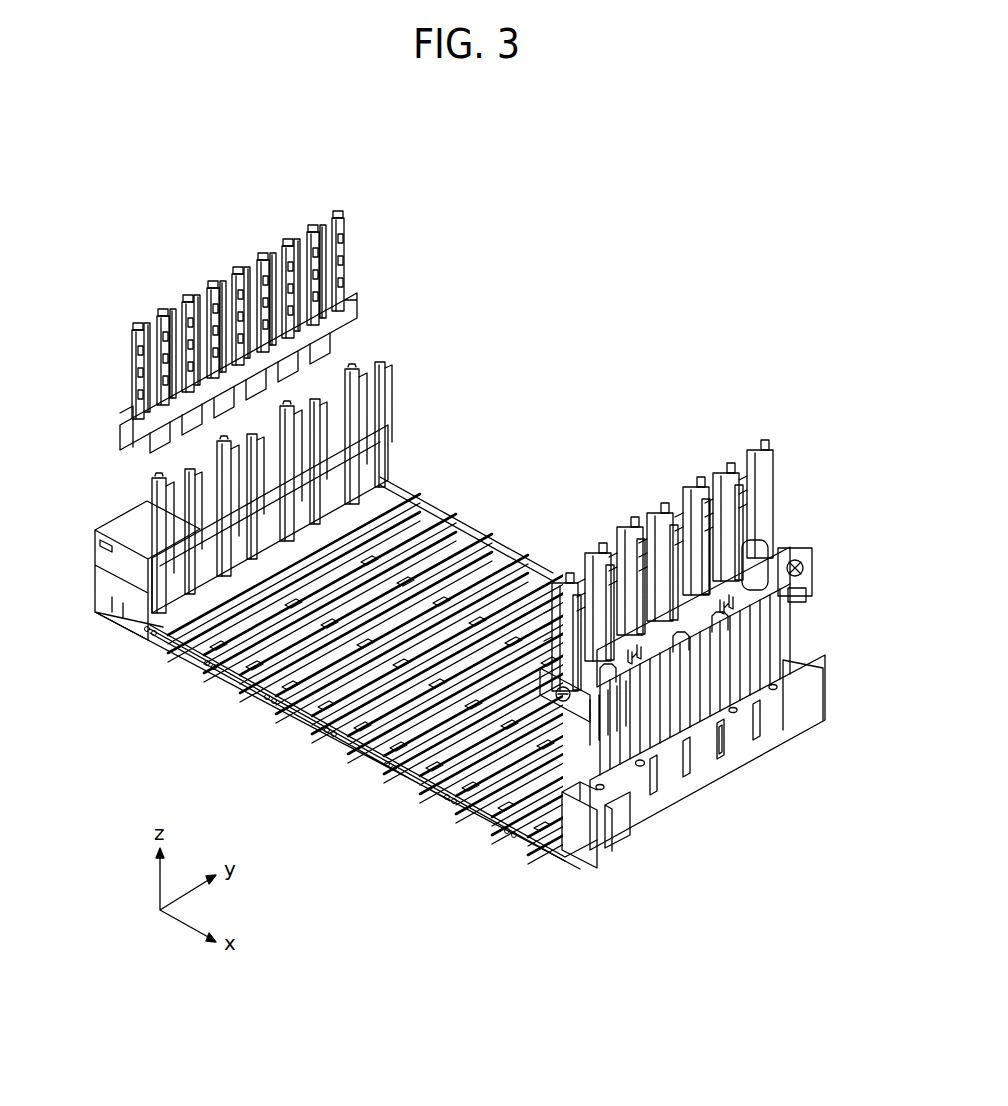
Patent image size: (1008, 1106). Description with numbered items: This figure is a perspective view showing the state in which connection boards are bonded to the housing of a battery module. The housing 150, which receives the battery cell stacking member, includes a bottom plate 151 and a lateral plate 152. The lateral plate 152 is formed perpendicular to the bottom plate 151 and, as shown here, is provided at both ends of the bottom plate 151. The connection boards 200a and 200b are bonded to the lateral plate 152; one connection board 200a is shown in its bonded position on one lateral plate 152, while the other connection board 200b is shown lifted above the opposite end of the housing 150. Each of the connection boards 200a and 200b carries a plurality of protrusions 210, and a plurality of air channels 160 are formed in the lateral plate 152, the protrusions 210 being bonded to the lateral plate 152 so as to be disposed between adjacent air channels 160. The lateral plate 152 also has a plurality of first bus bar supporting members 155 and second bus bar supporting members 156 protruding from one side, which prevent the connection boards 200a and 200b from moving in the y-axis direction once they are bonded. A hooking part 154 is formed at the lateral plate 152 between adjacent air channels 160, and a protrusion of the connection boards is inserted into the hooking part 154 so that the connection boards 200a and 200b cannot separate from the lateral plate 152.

The housing 150 is at (233, 692).
The bottom plate 151 is at (325, 716).
The lateral plate 152 is at (128, 556).
The hooking part 154 is at (643, 768).
The first bus bar supporting member 155 is at (160, 512).
The second bus bar supporting member 156 is at (180, 470).
The air channel 160 is at (718, 755).
The connection board 200a is at (778, 449).
The connection board 200b is at (365, 249).
The protrusion 210 is at (292, 362).